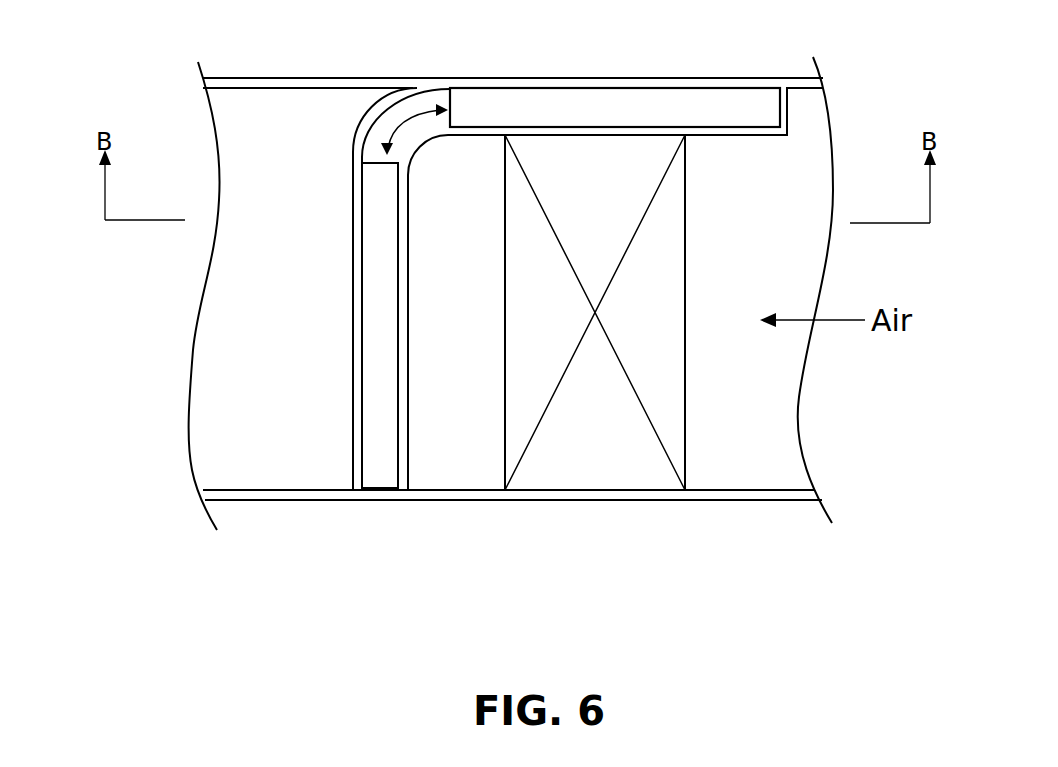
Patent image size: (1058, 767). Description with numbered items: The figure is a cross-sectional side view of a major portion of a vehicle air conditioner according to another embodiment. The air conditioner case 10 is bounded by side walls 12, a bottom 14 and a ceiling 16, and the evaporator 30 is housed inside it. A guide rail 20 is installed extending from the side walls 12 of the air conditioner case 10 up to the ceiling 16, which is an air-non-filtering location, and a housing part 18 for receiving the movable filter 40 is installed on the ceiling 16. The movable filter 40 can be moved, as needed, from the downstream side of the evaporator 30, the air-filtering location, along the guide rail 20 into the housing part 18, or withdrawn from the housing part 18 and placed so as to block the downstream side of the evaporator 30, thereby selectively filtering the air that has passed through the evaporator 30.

The air conditioner case 10 is at (732, 72).
The side wall 12 is at (200, 350).
The bottom 14 is at (263, 500).
The ceiling 16 is at (238, 78).
The housing part 18 is at (550, 98).
The guide rail 20 is at (355, 250).
The evaporator 30 is at (612, 475).
The movable filter 40 is at (606, 100).